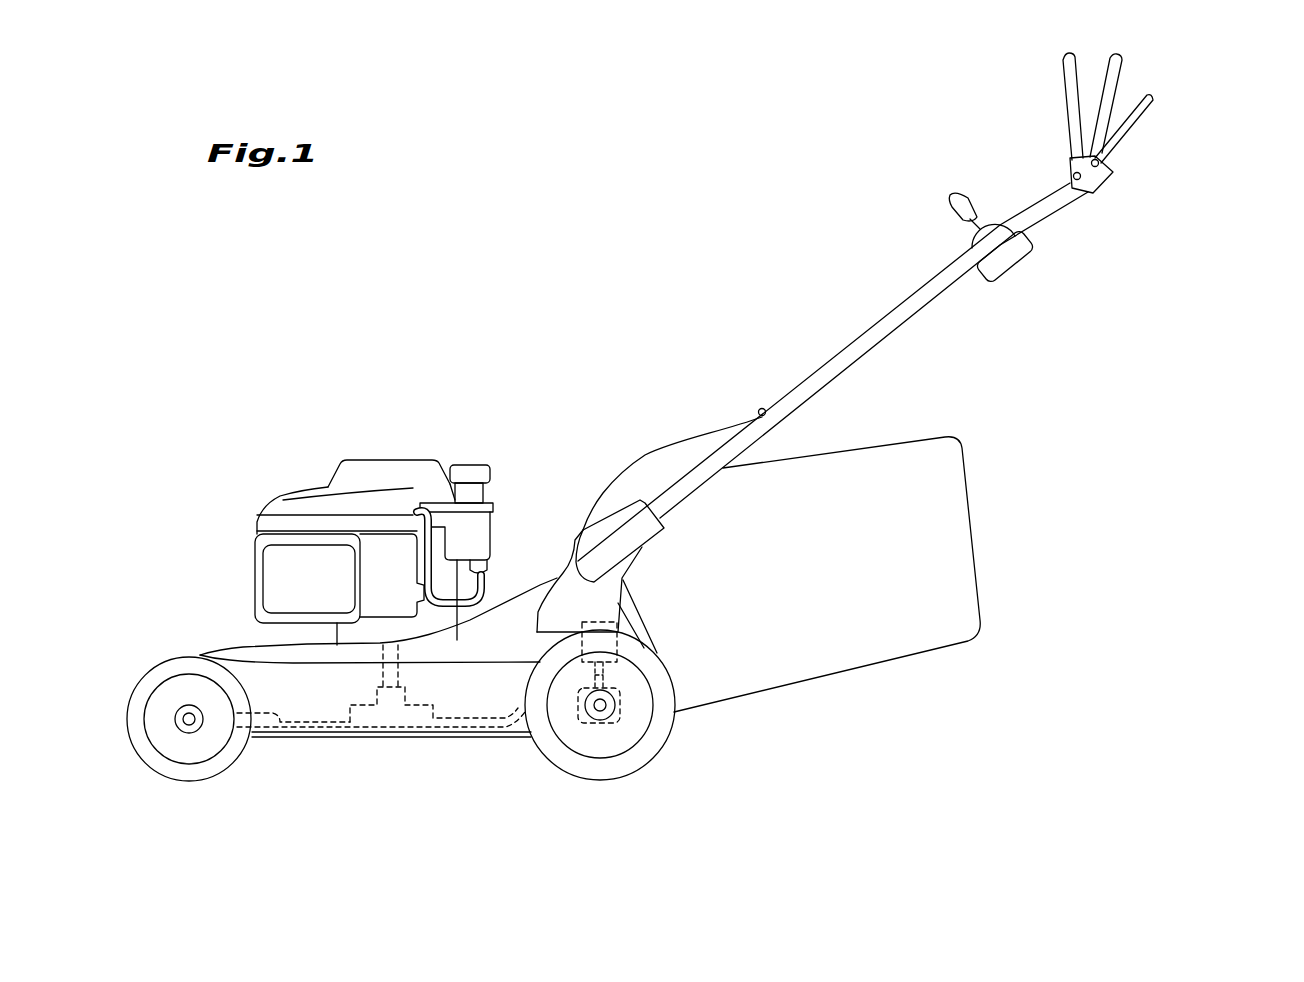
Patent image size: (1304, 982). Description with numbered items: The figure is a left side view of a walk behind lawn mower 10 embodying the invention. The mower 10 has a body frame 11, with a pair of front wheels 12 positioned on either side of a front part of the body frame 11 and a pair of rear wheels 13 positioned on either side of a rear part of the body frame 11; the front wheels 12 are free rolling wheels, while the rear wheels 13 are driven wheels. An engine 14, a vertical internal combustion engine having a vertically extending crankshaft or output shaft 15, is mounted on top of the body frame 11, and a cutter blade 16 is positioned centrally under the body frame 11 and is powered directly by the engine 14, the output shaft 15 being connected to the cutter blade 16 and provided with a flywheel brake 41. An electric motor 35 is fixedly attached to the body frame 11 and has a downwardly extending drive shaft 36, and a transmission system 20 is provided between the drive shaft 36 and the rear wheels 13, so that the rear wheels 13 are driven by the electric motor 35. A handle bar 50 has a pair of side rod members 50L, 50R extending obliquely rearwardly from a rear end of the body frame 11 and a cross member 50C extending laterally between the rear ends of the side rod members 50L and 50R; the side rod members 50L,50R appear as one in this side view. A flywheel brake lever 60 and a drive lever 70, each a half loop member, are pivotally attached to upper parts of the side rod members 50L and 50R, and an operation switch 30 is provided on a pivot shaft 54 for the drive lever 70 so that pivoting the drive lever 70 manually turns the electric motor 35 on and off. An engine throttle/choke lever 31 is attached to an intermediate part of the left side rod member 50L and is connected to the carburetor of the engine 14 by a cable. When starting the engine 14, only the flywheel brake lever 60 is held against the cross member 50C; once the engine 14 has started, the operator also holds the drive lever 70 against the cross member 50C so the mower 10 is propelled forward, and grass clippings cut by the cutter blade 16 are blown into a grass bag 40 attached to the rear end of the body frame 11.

The walk behind lawn mower 10 is at (268, 332).
The body frame 11 is at (222, 652).
The front wheels 12 is at (190, 776).
The rear wheels 13 is at (602, 773).
The engine 14 is at (385, 553).
The output shaft 15 is at (398, 675).
The cutter blade 16 is at (267, 728).
The transmission system 20 is at (618, 714).
The operation switch 30 is at (1113, 172).
The engine throttle/choke lever 31 is at (952, 197).
The electric motor 35 is at (618, 640).
The drive shaft 36 is at (603, 680).
The grass bag 40 is at (960, 533).
The flywheel brake 41 is at (407, 695).
The handle bar 50 is at (891, 297).
The side rod members 50L,50R is at (833, 372).
The left side rod member 50L is at (833, 372).
The right side rod member 50R is at (872, 333).
The cross member 50C is at (1120, 70).
The pivot shaft 54 is at (1093, 187).
The flywheel brake lever 60 is at (1147, 110).
The drive lever 70 is at (1078, 62).